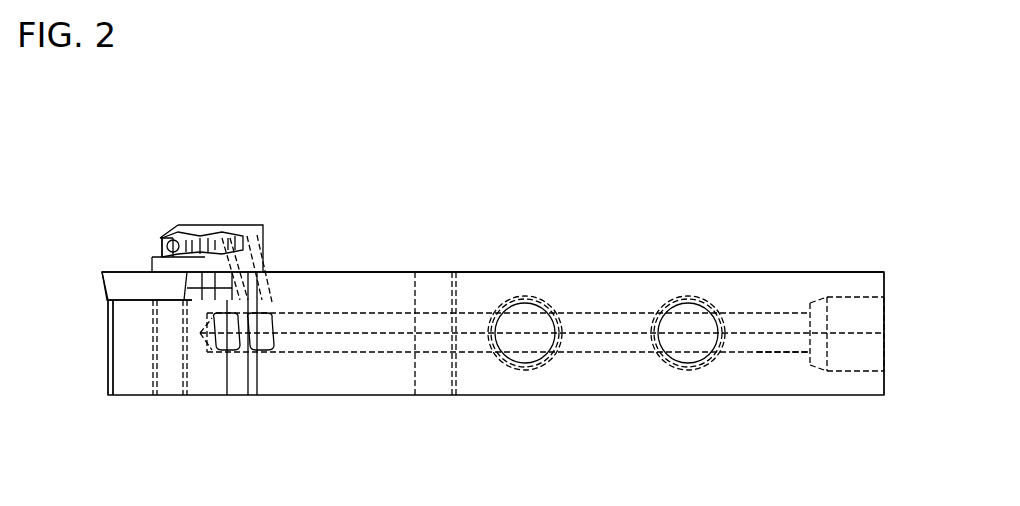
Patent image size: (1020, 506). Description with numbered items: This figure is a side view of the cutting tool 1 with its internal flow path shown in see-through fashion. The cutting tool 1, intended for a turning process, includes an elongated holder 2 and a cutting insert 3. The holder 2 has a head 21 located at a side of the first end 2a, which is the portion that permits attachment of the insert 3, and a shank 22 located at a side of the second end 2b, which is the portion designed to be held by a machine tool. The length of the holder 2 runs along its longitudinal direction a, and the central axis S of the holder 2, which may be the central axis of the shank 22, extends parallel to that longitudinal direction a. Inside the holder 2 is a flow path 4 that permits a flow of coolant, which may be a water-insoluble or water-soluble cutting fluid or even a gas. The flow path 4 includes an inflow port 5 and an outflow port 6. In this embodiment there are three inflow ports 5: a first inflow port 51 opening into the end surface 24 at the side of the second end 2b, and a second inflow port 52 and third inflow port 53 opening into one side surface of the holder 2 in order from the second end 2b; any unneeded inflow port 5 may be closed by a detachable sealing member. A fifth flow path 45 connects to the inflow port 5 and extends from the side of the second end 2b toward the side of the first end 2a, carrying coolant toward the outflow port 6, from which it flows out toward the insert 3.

The cutting tool 1 is at (905, 210).
The holder 2 is at (518, 188).
The first end 2a is at (106, 386).
The second end 2b is at (884, 388).
The cutting insert 3 is at (112, 268).
The flow path 4 is at (757, 352).
The inflow port 5 is at (715, 333).
The outflow port 6 is at (168, 237).
The head 21 is at (220, 225).
The shank 22 is at (573, 213).
The end surface 24 is at (884, 283).
The fifth flow path 45 is at (350, 352).
The first inflow port 51 is at (884, 317).
The second inflow port 52 is at (688, 296).
The third inflow port 53 is at (525, 296).
The central axis S is at (393, 333).
The longitudinal direction a is at (645, 428).